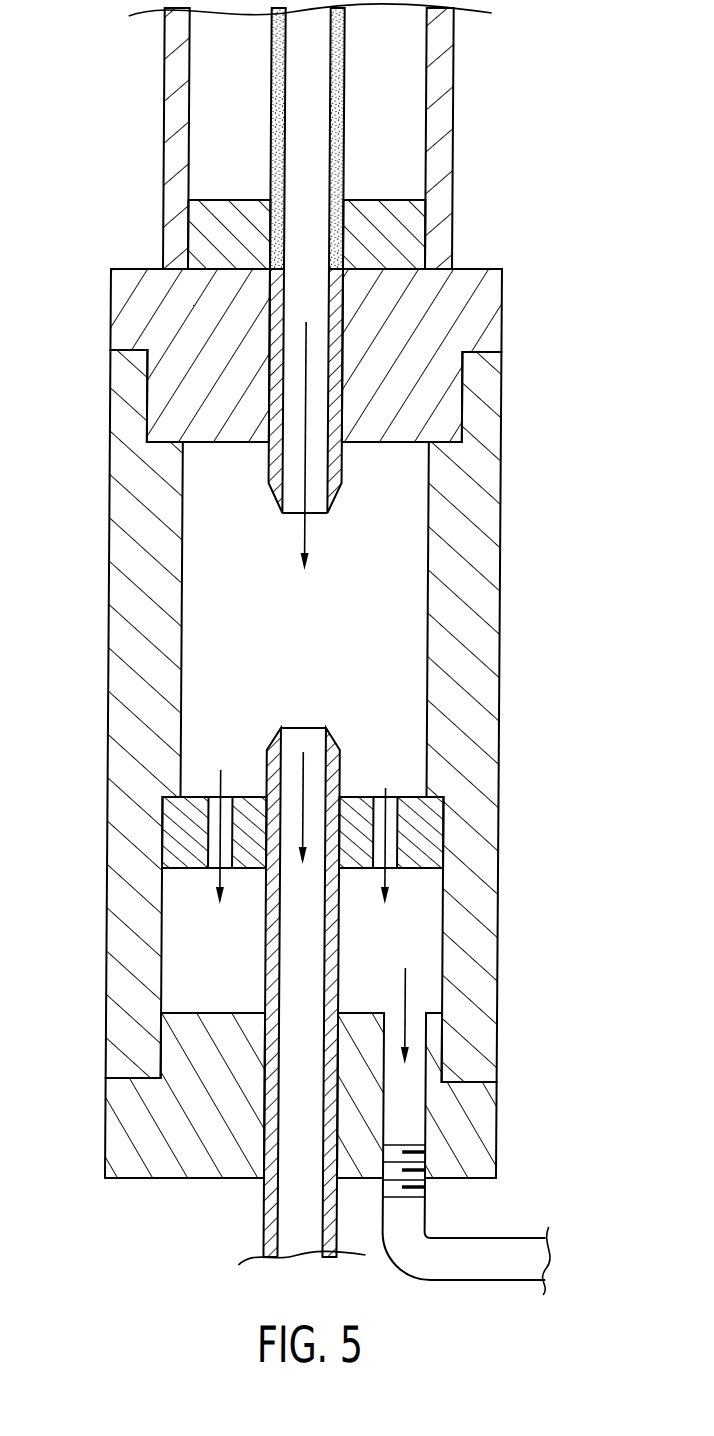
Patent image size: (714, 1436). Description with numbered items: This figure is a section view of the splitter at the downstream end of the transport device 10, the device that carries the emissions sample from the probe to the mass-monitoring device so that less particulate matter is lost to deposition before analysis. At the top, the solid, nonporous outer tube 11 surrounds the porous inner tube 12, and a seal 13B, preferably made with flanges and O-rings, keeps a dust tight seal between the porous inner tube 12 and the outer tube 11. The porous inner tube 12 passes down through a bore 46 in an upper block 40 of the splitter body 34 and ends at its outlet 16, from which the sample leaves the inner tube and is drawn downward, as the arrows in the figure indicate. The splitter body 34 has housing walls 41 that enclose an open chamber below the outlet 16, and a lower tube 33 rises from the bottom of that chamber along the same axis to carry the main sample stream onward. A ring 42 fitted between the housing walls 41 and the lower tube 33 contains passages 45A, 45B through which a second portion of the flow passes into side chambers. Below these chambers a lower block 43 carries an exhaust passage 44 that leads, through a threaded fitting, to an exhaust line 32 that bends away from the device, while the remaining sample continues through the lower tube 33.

The transport device 10 is at (107, 99).
The outer tube 11 is at (440, 125).
The porous inner tube 12 is at (345, 78).
The seal 13B is at (375, 220).
The outlet 16 is at (317, 513).
The exhaust line 32 is at (538, 1253).
The lower tube 33 is at (274, 1222).
The fitting assembly 34 is at (548, 660).
The upper block 40 is at (478, 287).
The housing wall 41 is at (488, 563).
The ring 42 is at (437, 838).
The lower block 43 is at (480, 1147).
The exhaust passage 44 is at (419, 1112).
The ring passage 45A is at (396, 812).
The ring passage 45B is at (215, 797).
The bore 46 is at (330, 293).